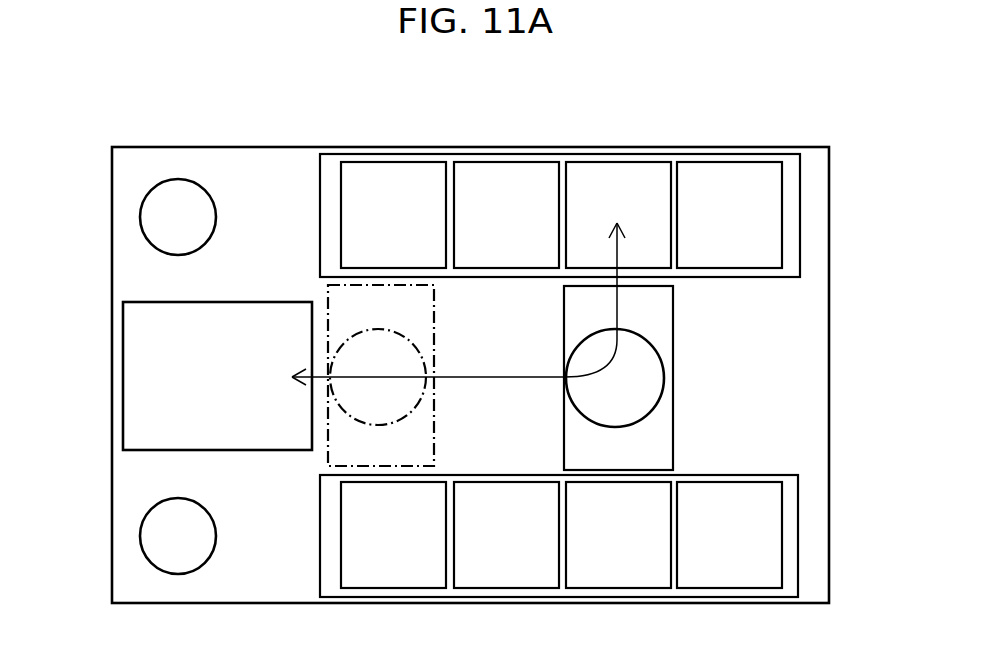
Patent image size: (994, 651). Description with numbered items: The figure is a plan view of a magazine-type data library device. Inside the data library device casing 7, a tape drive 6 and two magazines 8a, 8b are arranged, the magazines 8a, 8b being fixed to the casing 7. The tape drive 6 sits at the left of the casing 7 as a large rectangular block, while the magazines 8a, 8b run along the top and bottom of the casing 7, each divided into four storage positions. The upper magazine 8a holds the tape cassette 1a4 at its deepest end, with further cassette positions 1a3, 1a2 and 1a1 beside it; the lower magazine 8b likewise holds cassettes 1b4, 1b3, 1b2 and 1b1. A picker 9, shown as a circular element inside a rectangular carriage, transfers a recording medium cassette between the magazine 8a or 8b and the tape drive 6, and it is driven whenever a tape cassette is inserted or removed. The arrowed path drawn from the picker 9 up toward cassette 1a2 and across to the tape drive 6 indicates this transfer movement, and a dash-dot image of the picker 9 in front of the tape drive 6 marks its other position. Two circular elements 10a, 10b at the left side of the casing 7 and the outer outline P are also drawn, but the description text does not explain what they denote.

The processing unit 1a1 is at (736, 218).
The processing unit 1a2 is at (625, 218).
The processing unit 1a3 is at (513, 218).
The tape cassette 1a4 is at (400, 218).
The processing unit 1b1 is at (736, 542).
The processing unit 1b2 is at (625, 542).
The processing unit 1b3 is at (513, 542).
The processing unit 1b4 is at (400, 542).
The tape drive 6 is at (153, 373).
The data library device casing 7 is at (577, 334).
The magazine 8a is at (565, 254).
The magazine 8b is at (559, 505).
The picker 9 is at (642, 386).
The first port 10a is at (166, 220).
The second port 10b is at (166, 538).
The plate P is at (829, 371).